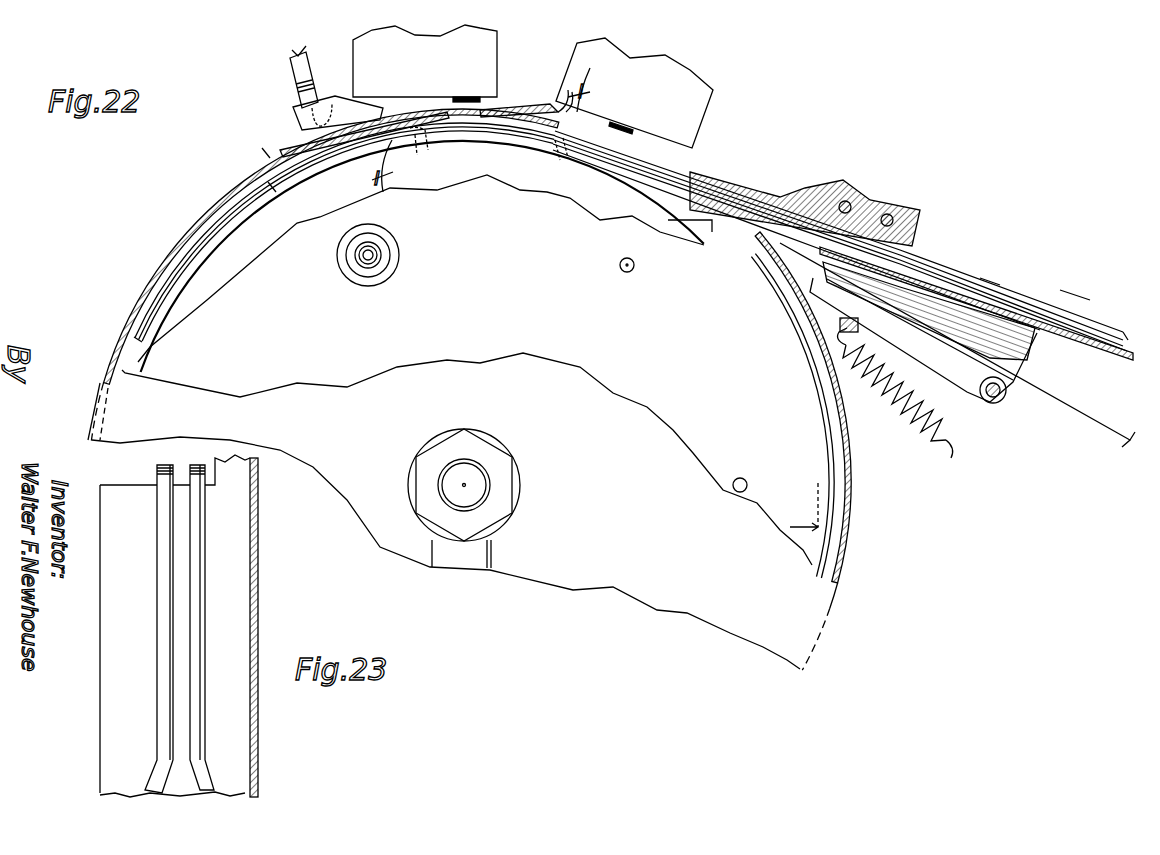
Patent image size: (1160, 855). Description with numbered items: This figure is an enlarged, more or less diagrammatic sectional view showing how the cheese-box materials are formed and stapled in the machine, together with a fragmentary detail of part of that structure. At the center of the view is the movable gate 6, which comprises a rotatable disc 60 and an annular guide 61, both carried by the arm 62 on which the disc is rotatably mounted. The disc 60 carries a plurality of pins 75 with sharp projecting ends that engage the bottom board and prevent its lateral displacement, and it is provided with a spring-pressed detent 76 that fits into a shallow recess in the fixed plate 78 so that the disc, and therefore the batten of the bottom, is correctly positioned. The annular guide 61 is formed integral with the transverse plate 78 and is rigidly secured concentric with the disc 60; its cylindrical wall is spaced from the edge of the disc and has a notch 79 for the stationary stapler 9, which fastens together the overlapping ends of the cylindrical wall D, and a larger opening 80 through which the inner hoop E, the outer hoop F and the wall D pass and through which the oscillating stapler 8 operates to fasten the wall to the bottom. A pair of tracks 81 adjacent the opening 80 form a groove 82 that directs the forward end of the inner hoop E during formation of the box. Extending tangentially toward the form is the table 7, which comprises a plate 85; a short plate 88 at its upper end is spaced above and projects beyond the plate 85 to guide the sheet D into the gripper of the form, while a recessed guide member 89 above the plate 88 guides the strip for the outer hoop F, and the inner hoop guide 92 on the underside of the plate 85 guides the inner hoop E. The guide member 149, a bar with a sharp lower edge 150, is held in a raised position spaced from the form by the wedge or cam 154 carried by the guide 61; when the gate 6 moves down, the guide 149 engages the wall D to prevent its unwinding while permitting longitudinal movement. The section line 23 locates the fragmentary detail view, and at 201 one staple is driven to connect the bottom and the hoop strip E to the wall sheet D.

In FIG. 22, the movable gate 6 is at (633, 577).
In FIG. 22, the table 7 is at (1090, 277).
In FIG. 22, the oscillating stapler 8 is at (703, 70).
In FIG. 22, the stationary stapler 9 is at (482, 30).
In FIG. 22, the section line 23- 23 is at (730, 371).
In FIG. 22, the disc 60 is at (322, 200).
In FIG. 22, the annular guide 61 is at (178, 245).
In FIG. 23, the annular guide 61 is at (110, 582).
In FIG. 22, the arm 62 is at (468, 562).
In FIG. 22, the pins 75 is at (625, 274).
In FIG. 22, the spring-pressed detent 76 is at (378, 258).
In FIG. 22, the fixed plate 78 is at (730, 614).
In FIG. 23, the fixed plate 78 is at (258, 732).
In FIG. 22, the notch 79 is at (455, 107).
In FIG. 22, the opening 80 is at (566, 105).
In FIG. 23, the opening 80 is at (116, 482).
In FIG. 22, the tracks 81 is at (724, 248).
In FIG. 23, the tracks 81 is at (165, 577).
In FIG. 22, the groove 82 is at (757, 258).
In FIG. 23, the groove 82 is at (180, 605).
In FIG. 22, the plate 85 is at (1112, 356).
In FIG. 22, the short plate 88 is at (912, 240).
In FIG. 22, the recessed guide member 89 is at (830, 200).
In FIG. 22, the inner hoop guide 92 is at (998, 404).
In FIG. 22, the guide member 149 is at (290, 74).
In FIG. 22, the sharp lower edge 150 is at (303, 128).
In FIG. 22, the wedge or cam 154 is at (338, 98).
In FIG. 22, the staple driving point 201 is at (432, 128).
In FIG. 22, the cylindrical wall D is at (1125, 337).
In FIG. 22, the inner hoop E is at (1090, 408).
In FIG. 22, the outer hoop F is at (1003, 296).